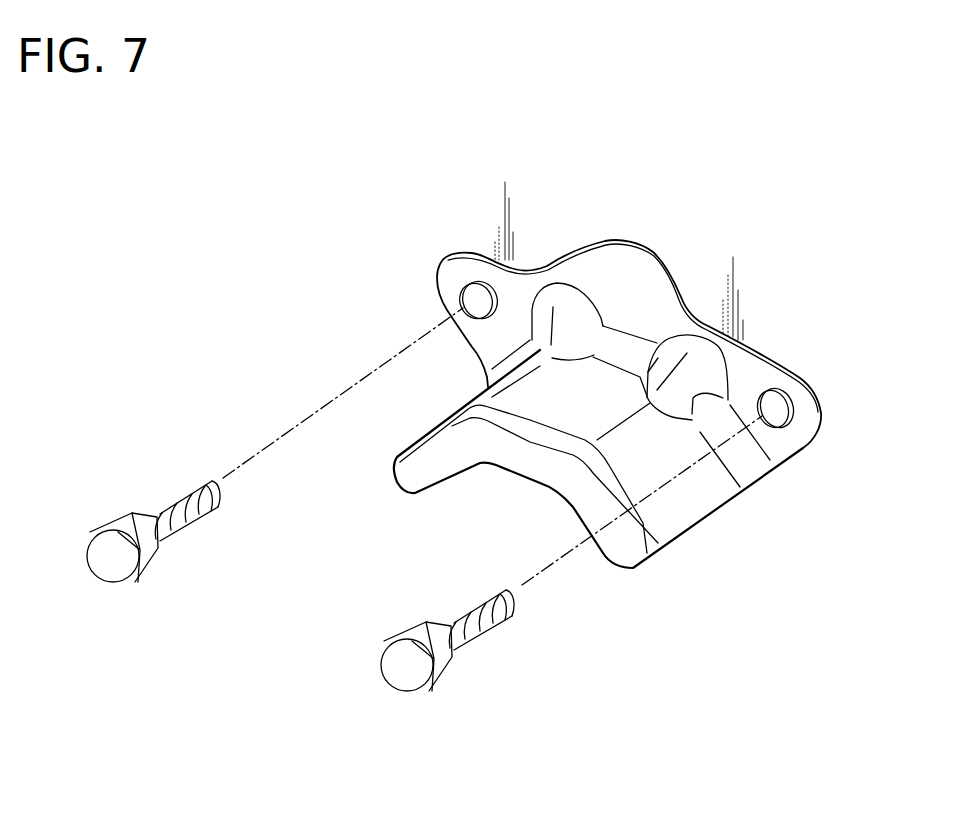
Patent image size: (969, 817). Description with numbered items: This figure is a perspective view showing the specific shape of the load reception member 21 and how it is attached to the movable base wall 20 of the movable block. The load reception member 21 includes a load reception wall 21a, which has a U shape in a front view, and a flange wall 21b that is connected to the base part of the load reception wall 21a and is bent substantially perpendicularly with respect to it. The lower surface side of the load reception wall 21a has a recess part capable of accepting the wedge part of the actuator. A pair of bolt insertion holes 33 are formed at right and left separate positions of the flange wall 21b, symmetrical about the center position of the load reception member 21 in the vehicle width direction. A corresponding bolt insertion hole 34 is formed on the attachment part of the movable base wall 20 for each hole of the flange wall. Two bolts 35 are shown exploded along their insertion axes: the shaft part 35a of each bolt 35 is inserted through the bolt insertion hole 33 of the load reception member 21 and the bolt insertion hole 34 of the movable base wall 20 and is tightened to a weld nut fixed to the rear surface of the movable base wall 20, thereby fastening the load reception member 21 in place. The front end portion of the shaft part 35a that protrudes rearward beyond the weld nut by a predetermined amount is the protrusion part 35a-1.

The movable base wall 20 is at (745, 277).
The load reception member 21 is at (633, 234).
The load reception wall 21a is at (537, 413).
The flange wall 21b is at (678, 299).
The bolt insertion hole 33 is at (466, 284).
The bolt insertion hole 34 is at (472, 305).
The bolt 35 is at (112, 570).
The shaft part 35a is at (158, 503).
The protrusion part 35a-1 is at (197, 473).